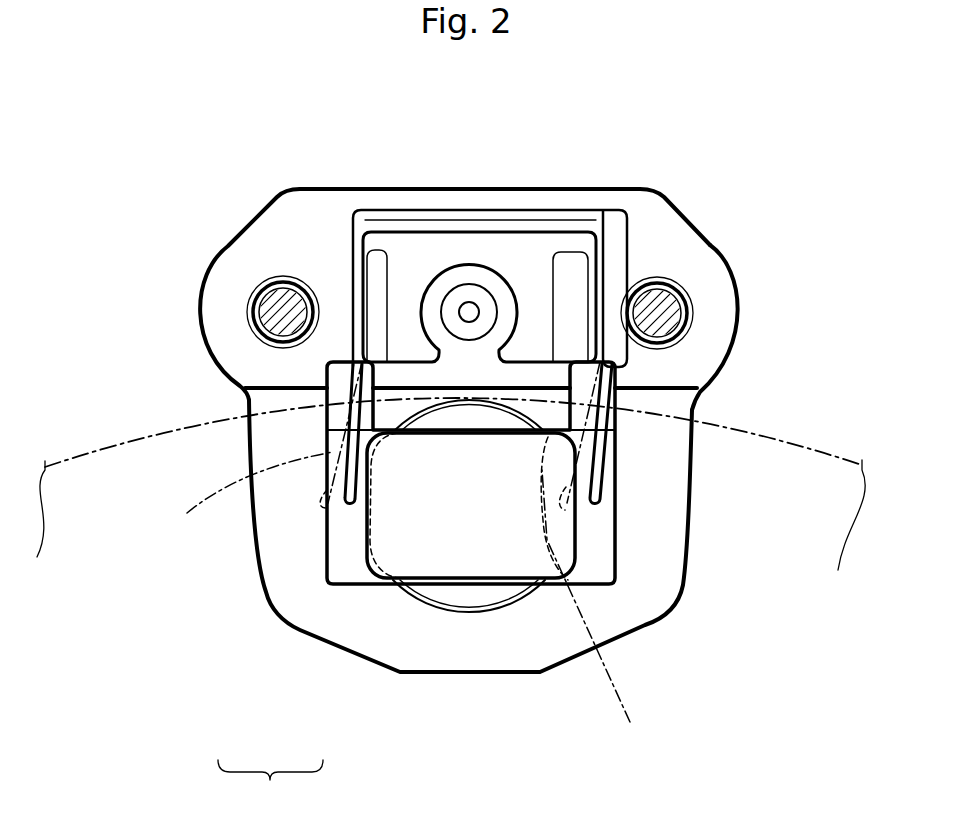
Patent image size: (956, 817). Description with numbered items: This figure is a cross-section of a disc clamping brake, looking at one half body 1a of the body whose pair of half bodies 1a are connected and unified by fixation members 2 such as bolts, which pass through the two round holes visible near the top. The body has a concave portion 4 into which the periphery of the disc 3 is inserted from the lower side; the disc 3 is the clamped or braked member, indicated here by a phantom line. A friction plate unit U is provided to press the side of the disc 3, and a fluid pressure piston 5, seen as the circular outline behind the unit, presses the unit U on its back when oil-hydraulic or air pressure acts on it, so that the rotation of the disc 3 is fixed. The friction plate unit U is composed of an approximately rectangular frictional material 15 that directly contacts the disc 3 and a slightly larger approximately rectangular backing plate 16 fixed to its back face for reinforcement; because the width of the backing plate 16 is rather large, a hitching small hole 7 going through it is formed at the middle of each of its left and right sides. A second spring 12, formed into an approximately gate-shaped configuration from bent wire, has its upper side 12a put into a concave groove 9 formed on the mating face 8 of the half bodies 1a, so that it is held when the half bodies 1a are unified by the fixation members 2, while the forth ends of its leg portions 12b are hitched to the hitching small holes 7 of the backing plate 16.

The half body 1a is at (660, 203).
The fixation member 2 is at (262, 283).
The disc 3 is at (800, 447).
The concave portion 4 is at (647, 540).
The fluid pressure piston 5 is at (485, 598).
The hitching small hole 7 is at (345, 507).
The mating face 8 is at (313, 237).
The concave groove 9 is at (520, 255).
The second spring 12 is at (480, 228).
The upper side of second spring 12a is at (417, 232).
The leg portion of second spring 12b is at (603, 477).
The frictional material 15 is at (430, 557).
The backing plate 16 is at (343, 568).
The friction plate unit U is at (270, 787).